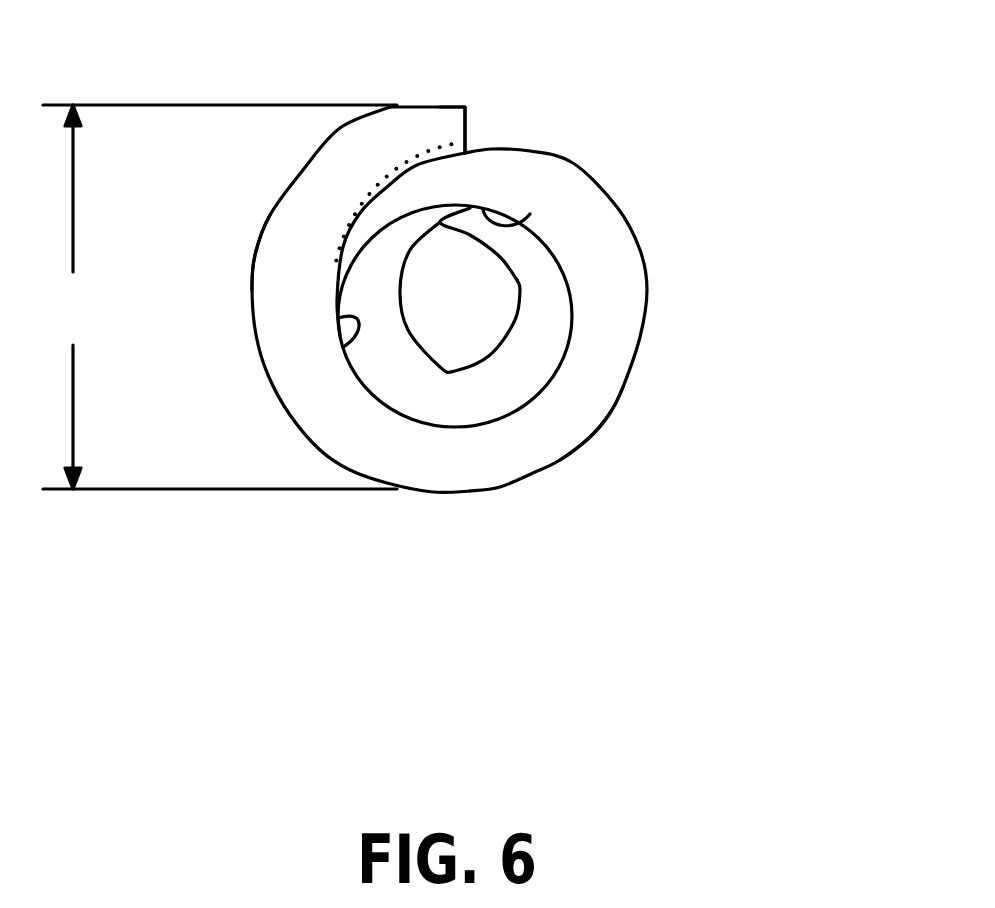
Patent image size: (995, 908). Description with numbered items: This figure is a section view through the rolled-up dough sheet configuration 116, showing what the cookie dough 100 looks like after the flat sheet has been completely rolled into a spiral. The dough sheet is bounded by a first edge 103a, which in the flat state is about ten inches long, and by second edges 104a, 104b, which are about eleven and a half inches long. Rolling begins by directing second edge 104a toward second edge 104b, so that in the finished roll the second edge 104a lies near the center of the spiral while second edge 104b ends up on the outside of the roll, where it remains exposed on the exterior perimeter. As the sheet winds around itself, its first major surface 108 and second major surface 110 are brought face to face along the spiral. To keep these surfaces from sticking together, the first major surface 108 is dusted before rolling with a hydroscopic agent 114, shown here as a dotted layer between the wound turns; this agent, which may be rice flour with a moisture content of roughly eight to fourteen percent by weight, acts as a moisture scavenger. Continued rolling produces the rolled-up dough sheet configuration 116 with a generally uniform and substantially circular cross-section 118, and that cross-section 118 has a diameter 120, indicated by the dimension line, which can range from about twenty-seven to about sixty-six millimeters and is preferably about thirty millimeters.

The cookie dough 100 is at (367, 435).
The first edge 103a is at (607, 340).
The second edge 104a is at (530, 214).
The second edge 104b is at (467, 127).
The first major surface 108 is at (343, 347).
The second major surface 110 is at (257, 257).
The hydroscopic agent 114 is at (367, 197).
The rolled-up dough sheet configuration 116 is at (683, 245).
The cross-section 118 is at (610, 415).
The diameter 120 is at (220, 297).